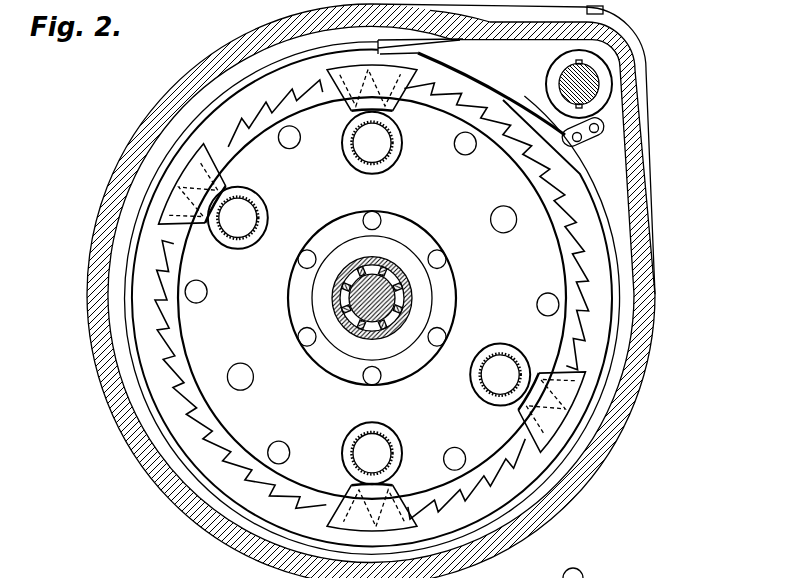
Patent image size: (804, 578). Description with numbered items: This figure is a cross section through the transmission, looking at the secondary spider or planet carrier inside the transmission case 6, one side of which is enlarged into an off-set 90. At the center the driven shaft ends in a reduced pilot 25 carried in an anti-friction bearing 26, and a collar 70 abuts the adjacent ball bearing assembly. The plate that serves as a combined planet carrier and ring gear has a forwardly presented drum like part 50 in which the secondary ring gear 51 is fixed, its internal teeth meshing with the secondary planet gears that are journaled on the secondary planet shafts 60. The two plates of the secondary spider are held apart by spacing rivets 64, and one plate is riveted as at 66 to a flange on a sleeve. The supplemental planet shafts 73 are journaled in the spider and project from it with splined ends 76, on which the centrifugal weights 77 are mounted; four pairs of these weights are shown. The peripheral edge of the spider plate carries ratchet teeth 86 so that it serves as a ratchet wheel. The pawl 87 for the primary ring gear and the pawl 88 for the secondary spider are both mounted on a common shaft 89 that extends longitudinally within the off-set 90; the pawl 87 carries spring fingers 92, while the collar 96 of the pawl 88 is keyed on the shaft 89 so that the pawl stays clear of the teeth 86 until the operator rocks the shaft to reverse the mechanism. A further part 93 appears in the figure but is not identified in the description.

The transmission case 6 is at (92, 303).
The pilot 25 is at (358, 320).
The anti-friction bearing 26 is at (407, 297).
The drum like part 50 is at (606, 233).
The secondary ring gear 51 is at (592, 272).
The secondary planet shafts 60 is at (497, 232).
The spacing rivets 64 is at (537, 308).
The rivets 66 is at (301, 266).
The collar 70 is at (314, 300).
The supplemental planet shafts 73 is at (305, 180).
The splines 76 is at (400, 146).
The centrifugal weights 77 is at (397, 497).
The ratchet teeth 86 is at (634, 193).
The pawl 87 is at (606, 162).
The pawl 88 is at (512, 73).
The shaft 89 is at (589, 87).
The off-set 90 is at (630, 107).
The fingers 92 is at (518, 155).
The bottom element 93 is at (529, 573).
The collar 96 is at (597, 62).